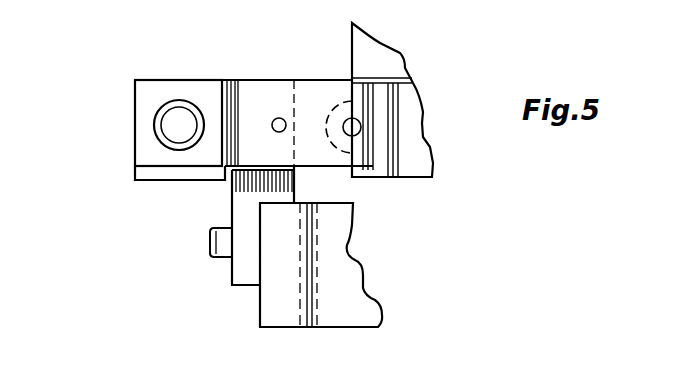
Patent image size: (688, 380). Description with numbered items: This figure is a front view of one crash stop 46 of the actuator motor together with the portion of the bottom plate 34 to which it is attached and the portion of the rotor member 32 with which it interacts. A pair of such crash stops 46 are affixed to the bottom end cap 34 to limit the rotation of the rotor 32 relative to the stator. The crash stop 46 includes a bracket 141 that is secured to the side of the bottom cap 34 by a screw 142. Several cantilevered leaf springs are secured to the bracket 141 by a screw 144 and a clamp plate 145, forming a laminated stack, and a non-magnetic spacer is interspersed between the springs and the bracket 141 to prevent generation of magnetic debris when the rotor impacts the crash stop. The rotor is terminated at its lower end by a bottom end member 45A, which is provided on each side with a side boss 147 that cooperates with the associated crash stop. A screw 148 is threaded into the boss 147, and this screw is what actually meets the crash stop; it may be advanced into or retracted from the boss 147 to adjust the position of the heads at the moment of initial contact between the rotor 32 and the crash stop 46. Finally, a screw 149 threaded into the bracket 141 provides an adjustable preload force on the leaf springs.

The rotor member 32 is at (382, 58).
The bottom plate 34 is at (290, 302).
The bottom end member 45A is at (405, 107).
The crash stop 46 is at (110, 153).
The bracket 141 is at (247, 201).
The screw 142 is at (223, 250).
The screw 144 is at (179, 100).
The clamp plate 145 is at (155, 92).
The side boss 147 is at (334, 100).
The screw 148 is at (360, 145).
The screw 149 is at (279, 118).